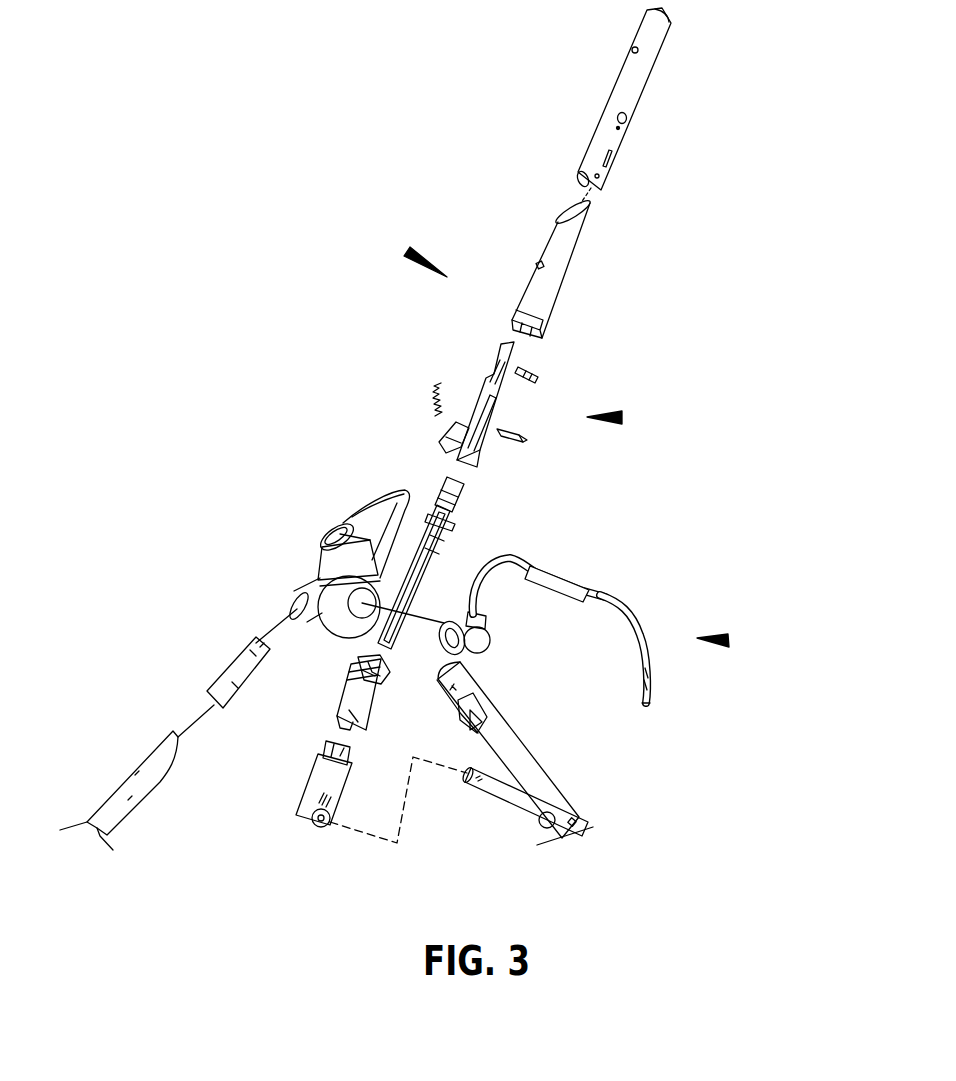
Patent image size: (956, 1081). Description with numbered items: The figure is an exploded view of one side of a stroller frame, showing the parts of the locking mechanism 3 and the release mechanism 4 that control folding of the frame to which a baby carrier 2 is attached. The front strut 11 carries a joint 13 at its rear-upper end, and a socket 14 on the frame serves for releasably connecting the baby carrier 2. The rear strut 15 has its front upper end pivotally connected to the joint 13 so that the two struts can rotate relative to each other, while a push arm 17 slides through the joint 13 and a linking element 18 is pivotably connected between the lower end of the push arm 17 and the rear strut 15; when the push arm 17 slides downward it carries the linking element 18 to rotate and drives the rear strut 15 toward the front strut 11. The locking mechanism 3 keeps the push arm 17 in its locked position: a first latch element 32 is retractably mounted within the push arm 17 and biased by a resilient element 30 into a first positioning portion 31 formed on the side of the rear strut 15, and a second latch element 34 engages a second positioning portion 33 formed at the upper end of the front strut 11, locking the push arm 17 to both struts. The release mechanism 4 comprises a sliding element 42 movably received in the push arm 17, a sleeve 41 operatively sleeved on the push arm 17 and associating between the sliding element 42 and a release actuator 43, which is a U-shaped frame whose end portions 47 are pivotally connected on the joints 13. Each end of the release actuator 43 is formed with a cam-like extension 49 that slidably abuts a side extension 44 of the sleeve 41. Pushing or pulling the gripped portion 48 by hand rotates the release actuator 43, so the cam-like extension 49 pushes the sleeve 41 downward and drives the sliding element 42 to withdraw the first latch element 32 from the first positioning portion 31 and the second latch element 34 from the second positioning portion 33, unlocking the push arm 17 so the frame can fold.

The baby carrier 2 is at (406, 252).
The locking mechanism 3 is at (622, 418).
The release mechanism 4 is at (728, 641).
The front strut 11 is at (107, 812).
The joint 13 is at (358, 513).
The socket 14 is at (333, 570).
The rear strut 15 is at (523, 768).
The push arm 17 is at (623, 147).
The linking element 18 is at (503, 788).
The resilient element 30 is at (432, 414).
The first positioning portion 31 is at (483, 707).
The first latch element 32 is at (523, 440).
The second positioning portion 33 is at (240, 660).
The second latch element 34 is at (540, 373).
The sleeve 41 is at (352, 708).
The sliding element 42 is at (490, 383).
The release actuator 43 is at (637, 628).
The side extension 44 is at (365, 668).
The end portion 47 is at (478, 642).
The gripped portion 48 is at (570, 587).
The cam-like extension 49 is at (442, 652).